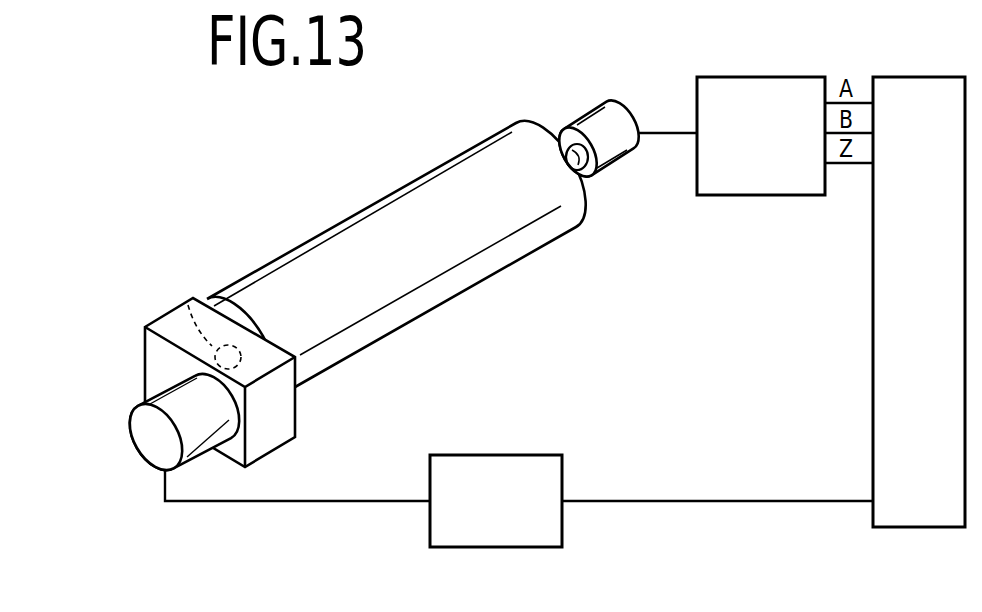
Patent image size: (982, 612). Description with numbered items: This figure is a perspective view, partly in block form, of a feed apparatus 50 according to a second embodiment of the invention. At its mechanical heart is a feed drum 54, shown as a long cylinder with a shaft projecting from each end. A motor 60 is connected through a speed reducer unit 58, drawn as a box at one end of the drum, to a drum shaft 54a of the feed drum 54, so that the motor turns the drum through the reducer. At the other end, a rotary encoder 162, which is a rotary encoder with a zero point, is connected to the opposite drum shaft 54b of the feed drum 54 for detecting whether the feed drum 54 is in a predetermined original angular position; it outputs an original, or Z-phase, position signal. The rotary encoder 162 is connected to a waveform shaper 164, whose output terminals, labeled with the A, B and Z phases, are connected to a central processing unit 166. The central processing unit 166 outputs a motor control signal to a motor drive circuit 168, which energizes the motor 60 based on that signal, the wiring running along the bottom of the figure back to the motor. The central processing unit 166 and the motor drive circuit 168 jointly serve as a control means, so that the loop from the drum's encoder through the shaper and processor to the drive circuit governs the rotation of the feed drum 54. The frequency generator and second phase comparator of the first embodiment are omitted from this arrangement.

The feed apparatus 50 is at (647, 58).
The feed drum 54 is at (400, 218).
The drum shaft 54a is at (183, 297).
The opposite drum shaft 54b is at (587, 180).
The speed reducer unit 58 is at (278, 418).
The motor 60 is at (140, 433).
The rotary encoder 162 is at (608, 118).
The waveform shaper 164 is at (747, 77).
The central processing unit 166 is at (873, 317).
The motor drive circuit 168 is at (513, 455).